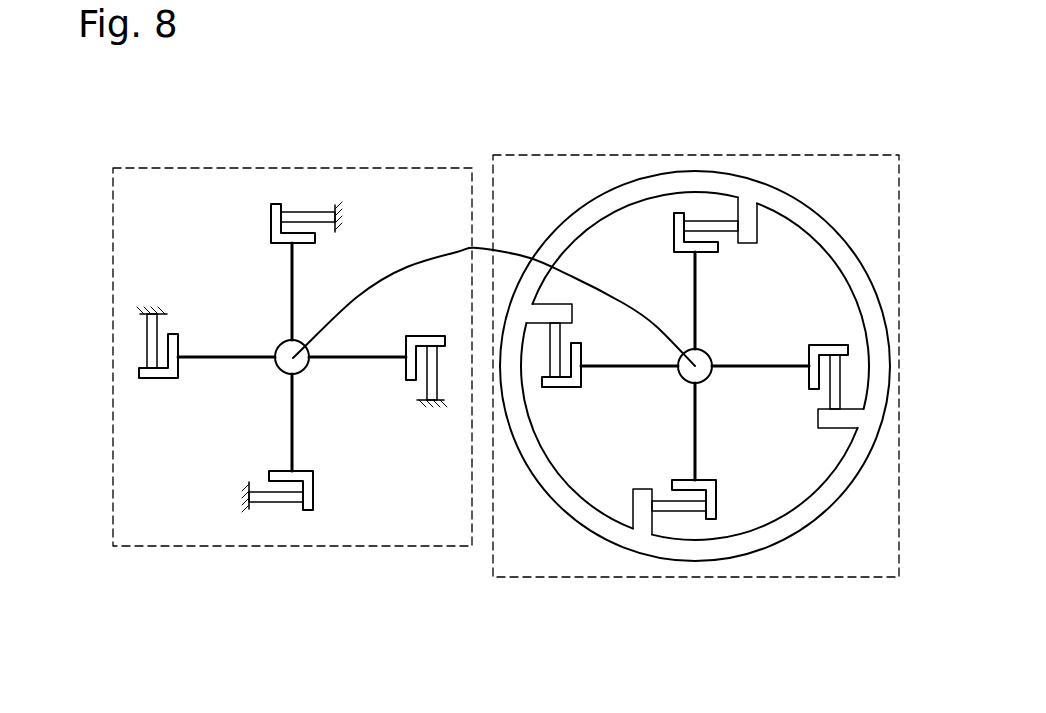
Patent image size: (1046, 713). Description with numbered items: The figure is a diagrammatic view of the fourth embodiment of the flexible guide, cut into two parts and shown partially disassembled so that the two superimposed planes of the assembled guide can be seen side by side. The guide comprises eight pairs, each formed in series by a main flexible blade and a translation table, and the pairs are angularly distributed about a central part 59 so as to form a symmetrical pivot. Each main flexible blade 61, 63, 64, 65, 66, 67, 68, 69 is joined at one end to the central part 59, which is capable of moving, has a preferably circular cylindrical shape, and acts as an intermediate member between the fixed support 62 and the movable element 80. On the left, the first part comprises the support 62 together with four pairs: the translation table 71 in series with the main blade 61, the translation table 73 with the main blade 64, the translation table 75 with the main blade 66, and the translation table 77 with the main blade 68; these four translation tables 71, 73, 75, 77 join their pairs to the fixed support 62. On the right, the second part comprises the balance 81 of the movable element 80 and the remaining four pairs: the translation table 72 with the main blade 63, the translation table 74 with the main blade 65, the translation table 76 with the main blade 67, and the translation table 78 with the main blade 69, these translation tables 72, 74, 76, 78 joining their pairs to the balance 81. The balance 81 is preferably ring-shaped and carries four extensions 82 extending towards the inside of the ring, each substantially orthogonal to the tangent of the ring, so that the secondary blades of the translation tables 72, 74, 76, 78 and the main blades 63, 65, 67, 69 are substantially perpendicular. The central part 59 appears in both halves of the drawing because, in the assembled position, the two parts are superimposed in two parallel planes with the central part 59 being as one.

The central part 59 is at (277, 360).
The main flexible blade 61 is at (290, 283).
The fixed support 62 is at (347, 203).
The main flexible blade 63 is at (637, 367).
The main flexible blade 64 is at (213, 358).
The main flexible blade 65 is at (697, 423).
The main flexible blade 66 is at (290, 437).
The main flexible blade 67 is at (783, 365).
The main flexible blade 68 is at (333, 357).
The main flexible blade 69 is at (692, 288).
The translation table 71 is at (296, 186).
The translation table 72 is at (550, 410).
The translation table 73 is at (125, 350).
The translation table 74 is at (681, 532).
The translation table 75 is at (270, 523).
The translation table 76 is at (860, 378).
The translation table 77 is at (400, 430).
The translation table 78 is at (705, 195).
The movable element 80 is at (727, 366).
The balance 81 is at (838, 488).
The extensions 82 is at (563, 313).